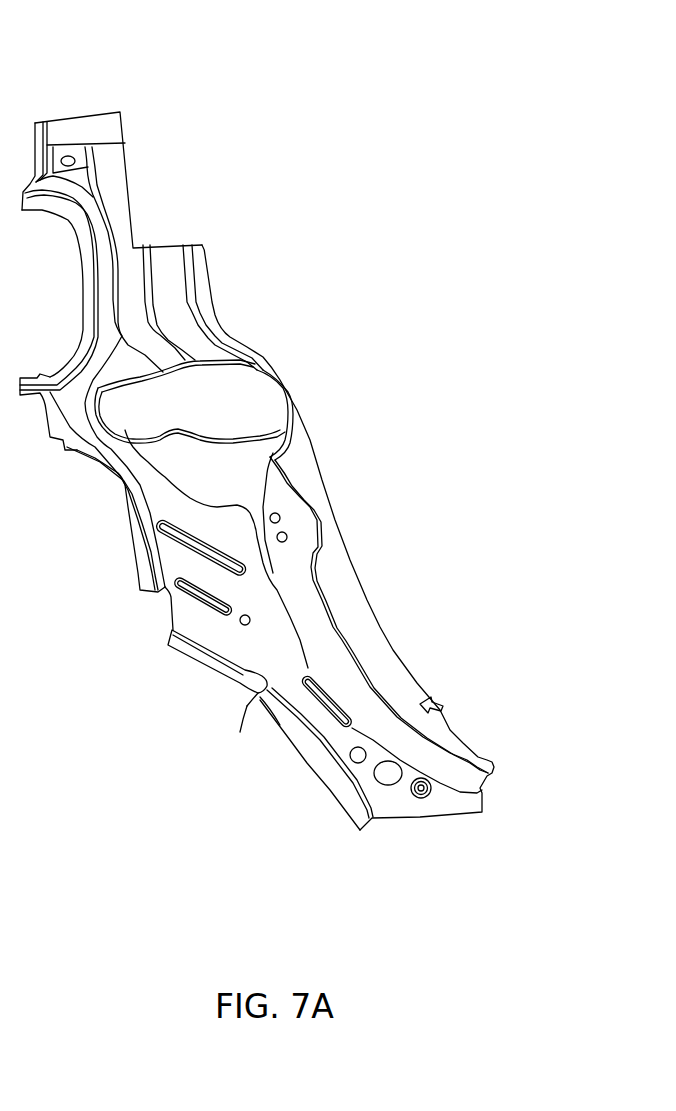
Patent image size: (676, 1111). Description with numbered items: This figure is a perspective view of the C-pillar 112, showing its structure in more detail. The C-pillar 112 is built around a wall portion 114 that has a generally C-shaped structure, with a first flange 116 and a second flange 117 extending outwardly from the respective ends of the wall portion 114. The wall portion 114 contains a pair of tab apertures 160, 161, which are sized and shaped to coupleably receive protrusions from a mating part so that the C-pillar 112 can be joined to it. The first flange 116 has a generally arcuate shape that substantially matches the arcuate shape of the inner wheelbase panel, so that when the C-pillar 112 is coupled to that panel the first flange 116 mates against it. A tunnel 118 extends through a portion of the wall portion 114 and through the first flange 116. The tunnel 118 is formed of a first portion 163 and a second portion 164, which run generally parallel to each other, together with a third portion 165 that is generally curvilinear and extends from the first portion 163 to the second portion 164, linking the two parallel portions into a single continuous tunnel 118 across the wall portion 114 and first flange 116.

The C-pillar 112 is at (96, 67).
The wall portion 114 is at (180, 578).
The first flange 116 is at (320, 760).
The second flange 117 is at (372, 648).
The tunnel 118 is at (250, 698).
The tab aperture 160 is at (284, 517).
The tab aperture 161 is at (288, 538).
The first portion 163 is at (258, 682).
The second portion 164 is at (255, 699).
The third portion 165 is at (252, 690).